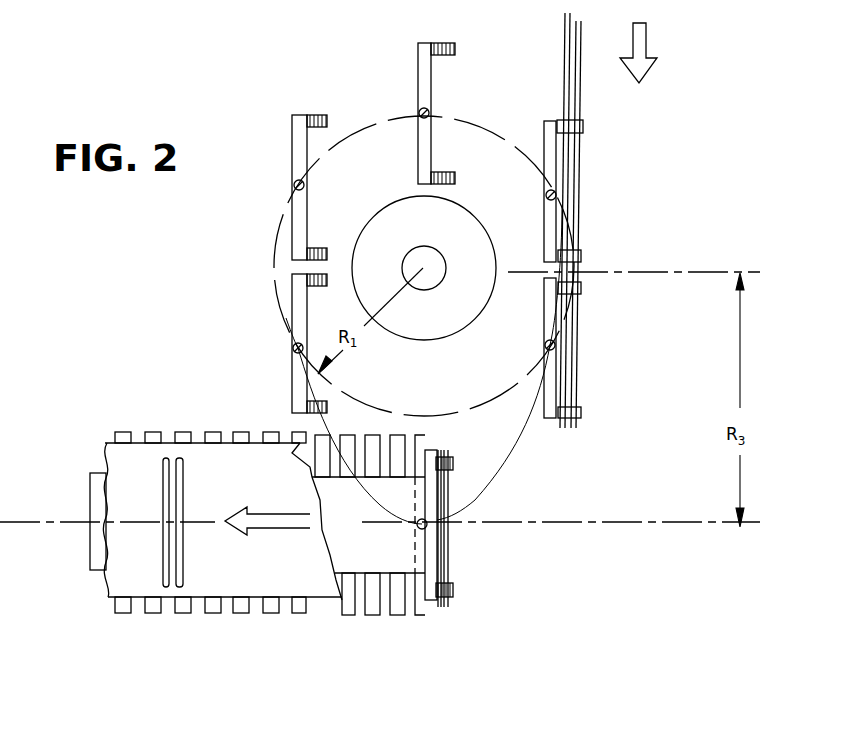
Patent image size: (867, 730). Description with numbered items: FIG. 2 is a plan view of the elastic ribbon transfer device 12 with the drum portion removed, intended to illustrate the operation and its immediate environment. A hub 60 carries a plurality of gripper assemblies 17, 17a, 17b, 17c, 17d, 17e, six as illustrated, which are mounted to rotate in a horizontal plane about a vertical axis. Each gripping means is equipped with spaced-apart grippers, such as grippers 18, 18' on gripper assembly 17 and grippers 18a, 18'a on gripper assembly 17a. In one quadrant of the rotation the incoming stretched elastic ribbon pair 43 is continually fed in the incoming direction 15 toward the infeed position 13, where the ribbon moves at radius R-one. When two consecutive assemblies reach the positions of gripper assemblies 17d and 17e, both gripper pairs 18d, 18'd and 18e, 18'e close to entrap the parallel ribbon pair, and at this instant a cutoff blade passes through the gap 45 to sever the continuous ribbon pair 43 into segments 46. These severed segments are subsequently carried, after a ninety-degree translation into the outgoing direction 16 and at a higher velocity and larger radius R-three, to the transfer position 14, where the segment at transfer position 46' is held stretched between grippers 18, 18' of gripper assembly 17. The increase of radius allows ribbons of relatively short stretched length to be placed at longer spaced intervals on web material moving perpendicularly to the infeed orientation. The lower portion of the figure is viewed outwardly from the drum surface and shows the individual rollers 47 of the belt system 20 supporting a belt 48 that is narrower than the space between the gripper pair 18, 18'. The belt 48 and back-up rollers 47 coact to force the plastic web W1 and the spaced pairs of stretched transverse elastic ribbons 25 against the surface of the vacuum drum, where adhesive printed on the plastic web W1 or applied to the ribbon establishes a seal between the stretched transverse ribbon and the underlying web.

The elastic ribbon transfer device 12 is at (368, 97).
The infeed position 13 is at (590, 268).
The transfer position 14 is at (447, 605).
The incoming direction 15 is at (650, 43).
The outgoing direction 16 is at (260, 553).
The gripper assembly 17 is at (425, 546).
The gripper assembly 17a is at (300, 323).
The gripper assembly 17b is at (293, 143).
The gripper assembly 17c is at (422, 83).
The gripper assembly 17d is at (548, 140).
The gripper assembly 17e is at (544, 367).
The gripper 18 is at (469, 454).
The gripper 18' is at (476, 585).
The gripper 18a is at (458, 52).
The gripper 18'a is at (459, 160).
The gripper 18d is at (583, 127).
The gripper 18'd is at (601, 234).
The gripper 18e is at (582, 288).
The gripper 18'e is at (604, 397).
The belt system 20 is at (358, 588).
The transverse elastic ribbon 25 is at (163, 482).
The stretched elastic ribbon pair 43 is at (578, 42).
The gap 45 is at (537, 271).
The ribbon segment 46 is at (606, 341).
The ribbon segment at transfer position 46' is at (477, 528).
The roller 47 is at (120, 610).
The belt 48 is at (330, 500).
The hub 60 is at (412, 260).
The plastic web W1 is at (223, 460).